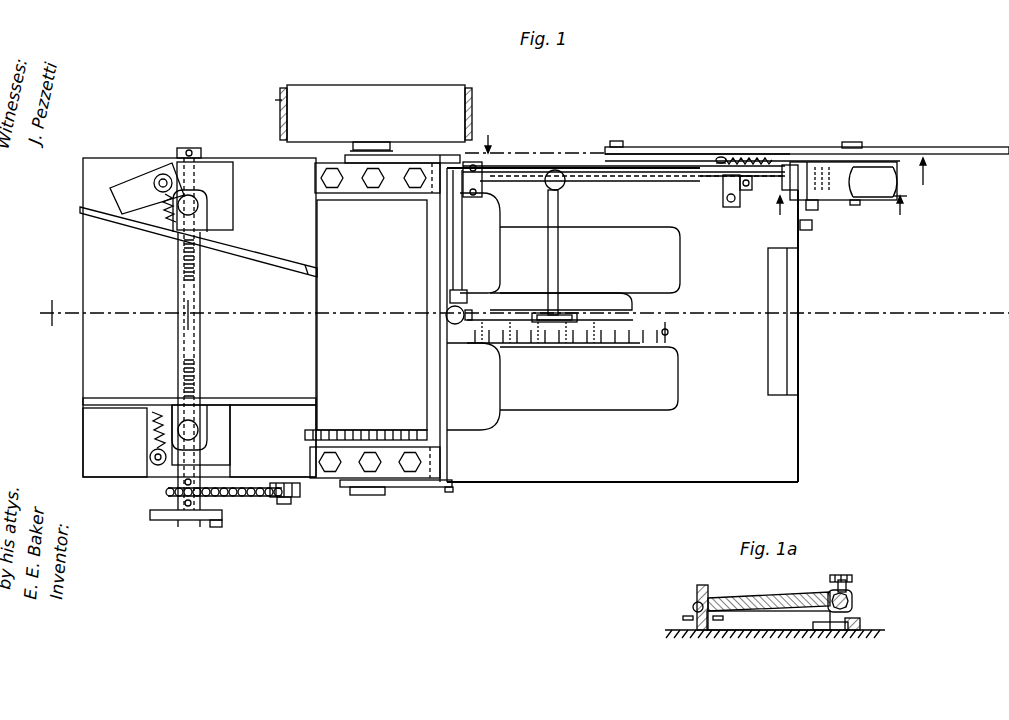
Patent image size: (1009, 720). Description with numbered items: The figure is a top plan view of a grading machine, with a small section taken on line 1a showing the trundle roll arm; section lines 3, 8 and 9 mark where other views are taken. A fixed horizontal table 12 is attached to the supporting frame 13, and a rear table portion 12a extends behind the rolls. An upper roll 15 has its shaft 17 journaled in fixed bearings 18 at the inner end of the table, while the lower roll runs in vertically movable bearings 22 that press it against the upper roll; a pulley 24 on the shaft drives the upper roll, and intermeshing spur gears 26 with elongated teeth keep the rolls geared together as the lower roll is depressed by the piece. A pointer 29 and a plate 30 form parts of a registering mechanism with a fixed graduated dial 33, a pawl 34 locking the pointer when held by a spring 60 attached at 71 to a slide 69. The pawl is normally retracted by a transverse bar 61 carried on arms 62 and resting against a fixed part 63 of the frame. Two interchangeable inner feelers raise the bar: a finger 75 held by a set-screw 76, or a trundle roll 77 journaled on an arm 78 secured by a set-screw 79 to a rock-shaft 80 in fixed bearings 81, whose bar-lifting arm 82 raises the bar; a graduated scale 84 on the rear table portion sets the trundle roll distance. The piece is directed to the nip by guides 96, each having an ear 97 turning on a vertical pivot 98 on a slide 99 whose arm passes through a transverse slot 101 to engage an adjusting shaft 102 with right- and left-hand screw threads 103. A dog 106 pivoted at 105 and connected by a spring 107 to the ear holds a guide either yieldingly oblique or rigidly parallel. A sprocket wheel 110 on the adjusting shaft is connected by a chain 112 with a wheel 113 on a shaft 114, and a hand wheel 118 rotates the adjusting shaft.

In FIG. 1, the section line 1ª—1ª 1a is at (553, 345).
In FIG. 1, the section line 3— 3 is at (45, 313).
In FIG. 1, the section line 8— 8 is at (699, 160).
In FIG. 1, the section line 9— 9 is at (840, 207).
In FIG. 1, the fixed horizontal table 12 is at (95, 380).
In FIG. 1, the rear table portion 12a is at (585, 485).
In FIG. 1A, the rear table portion 12a is at (728, 632).
In FIG. 1, the supporting frame 13 is at (390, 506).
In FIG. 1, the upper roll 15 is at (318, 366).
In FIG. 1, the shaft 17 is at (350, 520).
In FIG. 1, the fixed bearings 18 is at (350, 152).
In FIG. 1, the vertically movable bearings 22 is at (256, 97).
In FIG. 1, the pulley 24 is at (330, 95).
In FIG. 1, the intermeshing spur gears 26 is at (427, 437).
In FIG. 1, the pointer 29 is at (708, 180).
In FIG. 1, the plate 30 is at (900, 162).
In FIG. 1, the fixed graduated dial 33 is at (683, 147).
In FIG. 1, the pawl 34 is at (775, 160).
In FIG. 1, the spring 60 is at (740, 160).
In FIG. 1, the transverse bar 61 is at (566, 365).
In FIG. 1, the arms 62 is at (410, 153).
In FIG. 1, the fixed part of the frame 63 is at (372, 315).
In FIG. 1, the slide 69 is at (594, 162).
In FIG. 1A, the slide 69 is at (862, 628).
In FIG. 1, the attachment point 71 is at (722, 158).
In FIG. 1, the finger 75 is at (465, 310).
In FIG. 1, the set-screw 76 is at (473, 386).
In FIG. 1, the trundle roll 77 is at (570, 312).
In FIG. 1A, the trundle roll 77 is at (700, 593).
In FIG. 1, the arm 78 is at (560, 250).
In FIG. 1A, the arm 78 is at (785, 597).
In FIG. 1, the set-screw 79 is at (572, 182).
In FIG. 1A, the set-screw 79 is at (862, 577).
In FIG. 1, the rock-shaft 80 is at (652, 180).
In FIG. 1A, the rock-shaft 80 is at (854, 601).
In FIG. 1, the fixed bearings 81 is at (482, 190).
In FIG. 1, the bar-lifting arm 82 is at (462, 255).
In FIG. 1, the graduated scale 84 is at (760, 316).
In FIG. 1, the guides 96 is at (270, 262).
In FIG. 1, the ear 97 is at (207, 212).
In FIG. 1, the vertical pivot 98 is at (200, 200).
In FIG. 1, the slide 99 is at (222, 185).
In FIG. 1, the transverse slot 101 is at (200, 343).
In FIG. 1, the adjusting shaft 102 is at (190, 325).
In FIG. 1, the screw threads 103 is at (184, 264).
In FIG. 1, the pivot 105 is at (160, 176).
In FIG. 1, the dog 106 is at (128, 188).
In FIG. 1, the spring 107 is at (160, 205).
In FIG. 1, the sprocket wheel 110 is at (178, 518).
In FIG. 1, the chain 112 is at (242, 500).
In FIG. 1, the wheel 113 is at (300, 491).
In FIG. 1, the shaft 114 is at (285, 504).
In FIG. 1, the handle or hand wheel 118 is at (205, 522).
In FIG. 1, the axis a is at (557, 165).